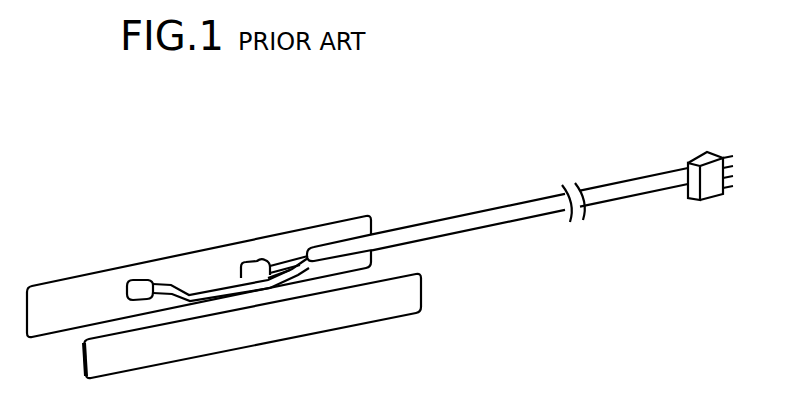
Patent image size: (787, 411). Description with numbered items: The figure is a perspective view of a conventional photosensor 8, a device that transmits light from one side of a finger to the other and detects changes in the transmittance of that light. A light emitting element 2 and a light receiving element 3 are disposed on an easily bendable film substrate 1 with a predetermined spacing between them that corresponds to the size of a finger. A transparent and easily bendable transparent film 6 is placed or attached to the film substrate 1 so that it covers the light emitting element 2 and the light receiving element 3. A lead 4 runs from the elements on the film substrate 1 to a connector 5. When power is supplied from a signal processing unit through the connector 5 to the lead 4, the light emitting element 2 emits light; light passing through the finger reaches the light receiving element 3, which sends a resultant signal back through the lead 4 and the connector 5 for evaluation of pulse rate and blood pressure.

The film substrate 1 is at (50, 286).
The light emitting element 2 is at (133, 282).
The light receiving element 3 is at (243, 258).
The lead 4 is at (492, 224).
The connector 5 is at (713, 187).
The transparent film 6 is at (255, 337).
The photosensor 8 is at (384, 197).